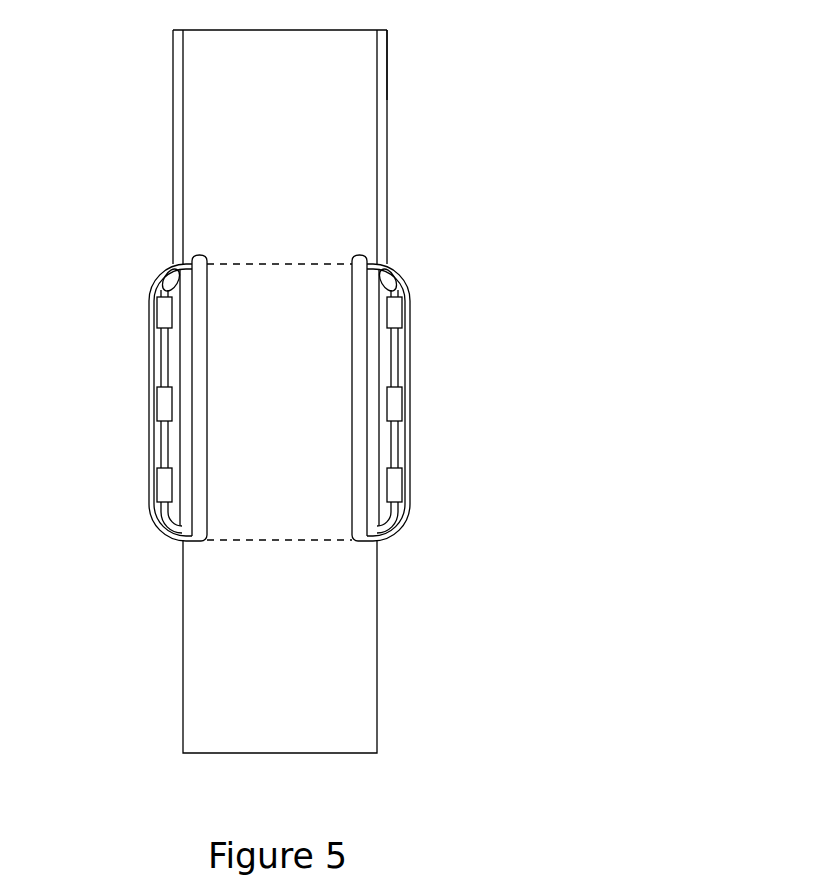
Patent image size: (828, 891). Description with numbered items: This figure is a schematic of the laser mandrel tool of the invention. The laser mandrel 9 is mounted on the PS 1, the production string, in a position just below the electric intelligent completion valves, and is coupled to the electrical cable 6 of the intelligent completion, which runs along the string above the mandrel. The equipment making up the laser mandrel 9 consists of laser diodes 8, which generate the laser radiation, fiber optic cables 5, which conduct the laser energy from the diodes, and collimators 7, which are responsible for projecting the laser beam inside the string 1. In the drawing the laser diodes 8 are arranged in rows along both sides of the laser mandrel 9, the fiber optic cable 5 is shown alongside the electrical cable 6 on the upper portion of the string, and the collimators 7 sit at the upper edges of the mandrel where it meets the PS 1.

The PS 1 is at (387, 649).
The fiber optic cable 5 is at (155, 140).
The electrical cable 6 is at (400, 52).
The collimators 7 is at (202, 253).
The laser diodes 8 is at (150, 322).
The laser mandrel 9 is at (140, 293).